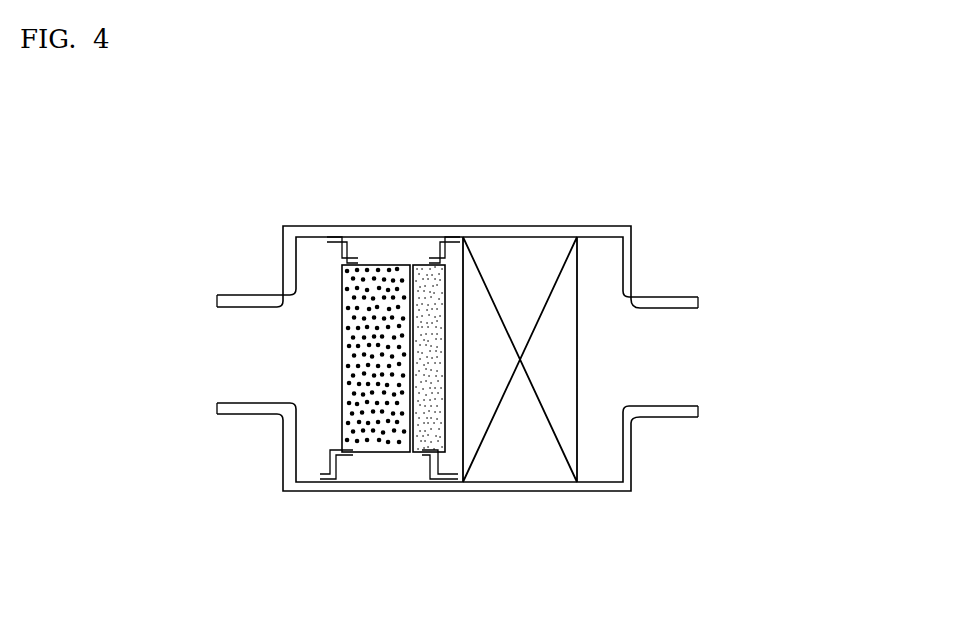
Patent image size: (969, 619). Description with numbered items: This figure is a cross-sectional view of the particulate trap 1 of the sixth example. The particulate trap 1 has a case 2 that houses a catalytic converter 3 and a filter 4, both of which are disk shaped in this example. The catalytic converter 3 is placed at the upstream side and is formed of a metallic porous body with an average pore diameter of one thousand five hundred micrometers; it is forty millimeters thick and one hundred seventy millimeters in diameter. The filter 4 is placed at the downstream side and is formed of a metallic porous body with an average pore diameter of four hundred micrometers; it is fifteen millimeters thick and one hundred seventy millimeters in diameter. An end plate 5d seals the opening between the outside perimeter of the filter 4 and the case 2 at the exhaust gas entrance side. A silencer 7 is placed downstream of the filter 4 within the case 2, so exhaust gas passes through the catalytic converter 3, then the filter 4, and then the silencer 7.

The particulate trap 1 is at (364, 204).
The case 2 is at (407, 225).
The catalytic converter 3 is at (363, 422).
The filter 4 is at (424, 427).
The end plate 5d is at (335, 253).
The silencer 7 is at (535, 263).